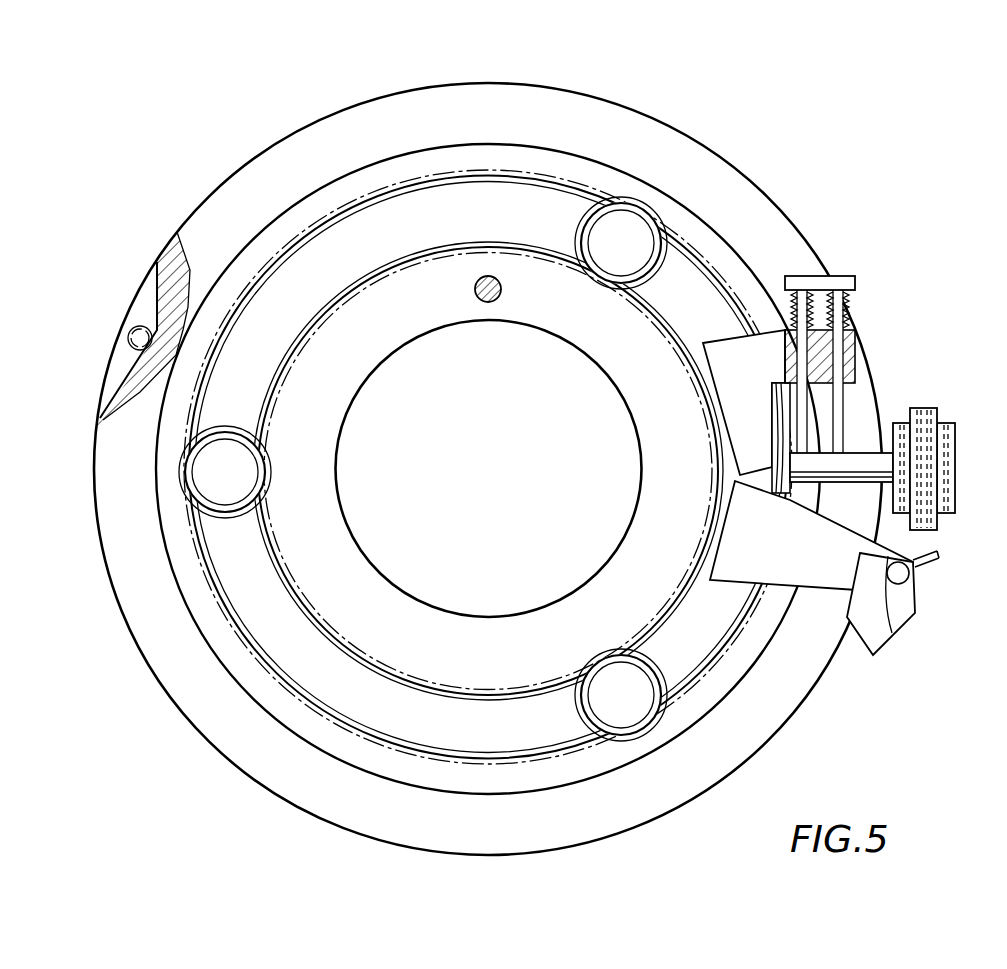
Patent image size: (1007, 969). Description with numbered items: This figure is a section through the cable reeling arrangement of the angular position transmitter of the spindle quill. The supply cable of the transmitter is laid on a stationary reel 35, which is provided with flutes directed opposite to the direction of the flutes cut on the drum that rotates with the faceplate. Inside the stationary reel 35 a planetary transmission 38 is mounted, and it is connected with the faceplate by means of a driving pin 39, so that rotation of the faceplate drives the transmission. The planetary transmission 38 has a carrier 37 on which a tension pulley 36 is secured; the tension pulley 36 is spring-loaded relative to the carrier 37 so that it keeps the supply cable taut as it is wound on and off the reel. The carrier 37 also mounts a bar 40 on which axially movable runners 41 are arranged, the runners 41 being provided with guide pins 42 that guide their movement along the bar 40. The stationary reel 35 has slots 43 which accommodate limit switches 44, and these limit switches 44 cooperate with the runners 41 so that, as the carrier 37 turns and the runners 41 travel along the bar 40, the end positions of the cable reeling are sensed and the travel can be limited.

The stationary reel 35 is at (527, 112).
The tension pulley 36 is at (945, 430).
The carrier 37 is at (770, 360).
The planetary transmission 38 is at (632, 228).
The driving pin 39 is at (474, 290).
The bar 40 is at (909, 576).
The runners 41 is at (905, 607).
The guide pins 42 is at (939, 555).
The slots 43 is at (140, 312).
The limit switches 44 is at (131, 330).